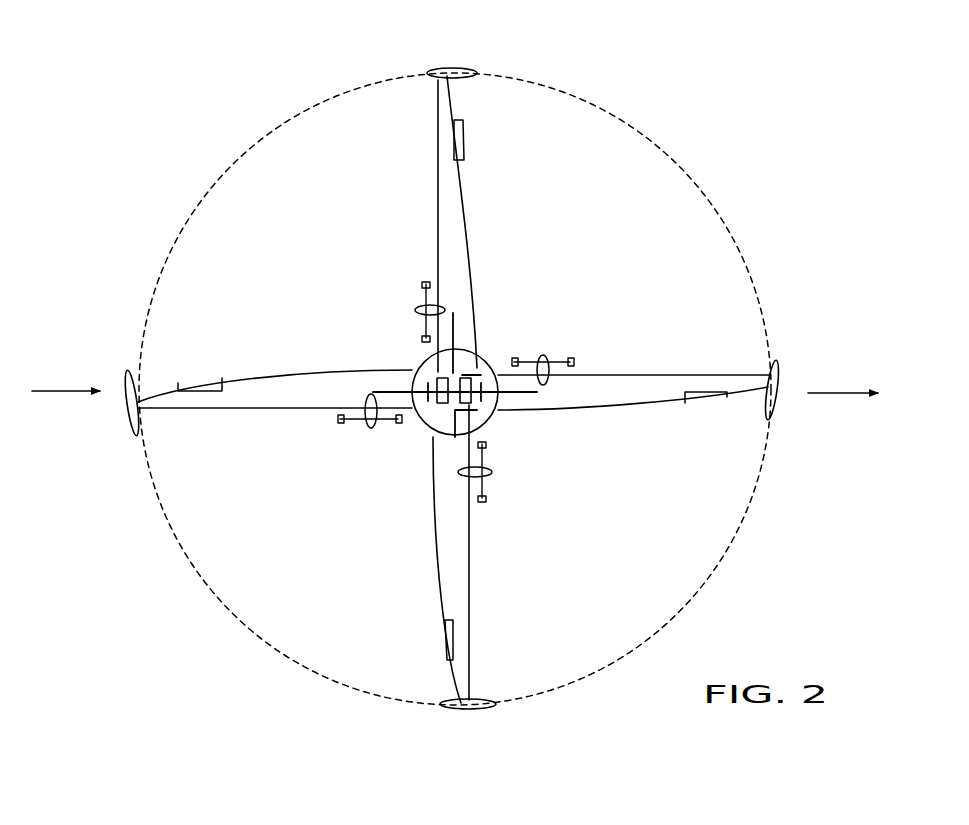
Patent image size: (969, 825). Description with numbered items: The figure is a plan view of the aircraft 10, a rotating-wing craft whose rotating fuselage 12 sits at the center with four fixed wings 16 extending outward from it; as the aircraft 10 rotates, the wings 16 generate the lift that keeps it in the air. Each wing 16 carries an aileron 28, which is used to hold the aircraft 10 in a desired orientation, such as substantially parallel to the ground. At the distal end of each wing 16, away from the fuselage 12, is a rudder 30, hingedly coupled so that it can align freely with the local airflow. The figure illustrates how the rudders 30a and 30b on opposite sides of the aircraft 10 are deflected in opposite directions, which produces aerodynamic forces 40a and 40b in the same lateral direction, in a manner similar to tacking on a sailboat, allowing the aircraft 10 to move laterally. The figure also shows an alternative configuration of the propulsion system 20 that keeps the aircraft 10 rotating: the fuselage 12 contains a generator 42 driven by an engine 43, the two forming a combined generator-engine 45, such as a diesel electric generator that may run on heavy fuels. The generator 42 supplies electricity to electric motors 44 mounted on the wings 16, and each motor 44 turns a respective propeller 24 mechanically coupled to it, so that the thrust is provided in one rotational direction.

The aircraft 10 is at (250, 123).
The rotating fuselage 12 is at (476, 368).
The fixed wings 16 is at (438, 200).
The propulsion system 20 is at (350, 293).
The propellers 24 is at (425, 283).
The ailerons 28 is at (465, 143).
The rudders 30 is at (458, 70).
The rudder 30a is at (130, 417).
The rudder 30b is at (777, 372).
The aerodynamic force 40a is at (65, 390).
The aerodynamic force 40b is at (833, 395).
The generator 42 is at (438, 378).
The engine 43 is at (473, 402).
The electric motors 44 is at (446, 310).
The combined generator-engine 45 is at (432, 412).